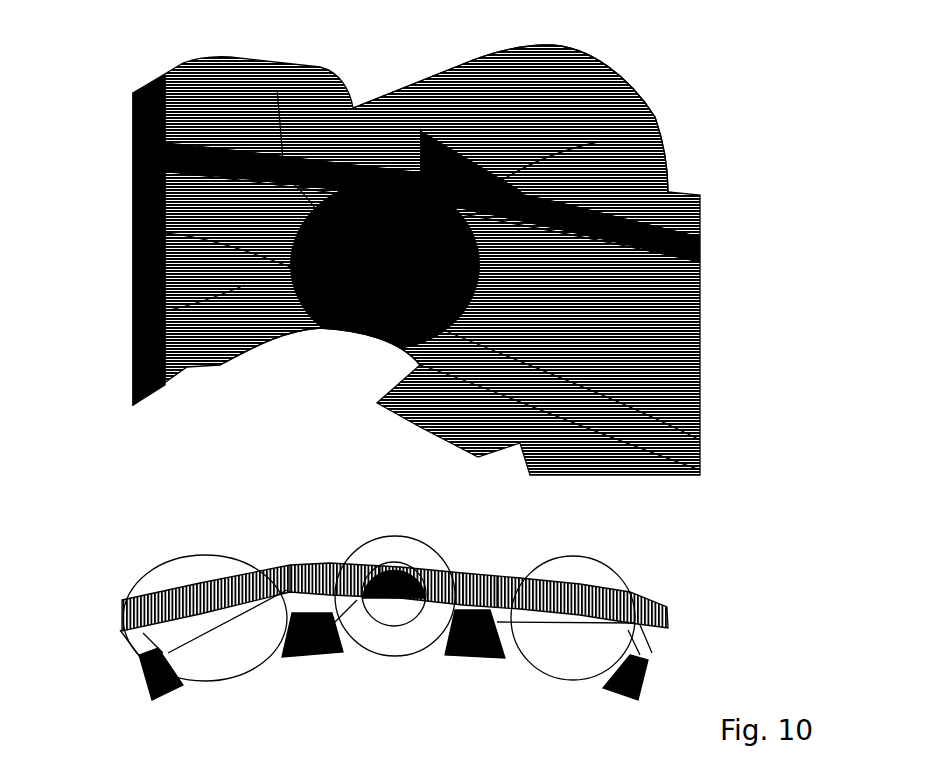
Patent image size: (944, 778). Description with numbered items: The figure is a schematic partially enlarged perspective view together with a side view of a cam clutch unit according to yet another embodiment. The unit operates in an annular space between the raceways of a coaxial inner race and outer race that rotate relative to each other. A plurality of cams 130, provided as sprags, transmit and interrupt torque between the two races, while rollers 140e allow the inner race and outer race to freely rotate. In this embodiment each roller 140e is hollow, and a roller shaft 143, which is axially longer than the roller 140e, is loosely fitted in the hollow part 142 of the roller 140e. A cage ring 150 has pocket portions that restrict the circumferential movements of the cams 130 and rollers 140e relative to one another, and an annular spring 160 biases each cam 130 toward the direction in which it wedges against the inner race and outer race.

The cam 130 is at (607, 570).
The roller 140e is at (655, 117).
The hollow part 142 is at (135, 316).
The roller shaft 143 is at (320, 328).
The cage ring 150 is at (133, 233).
The annular spring 160 is at (276, 90).